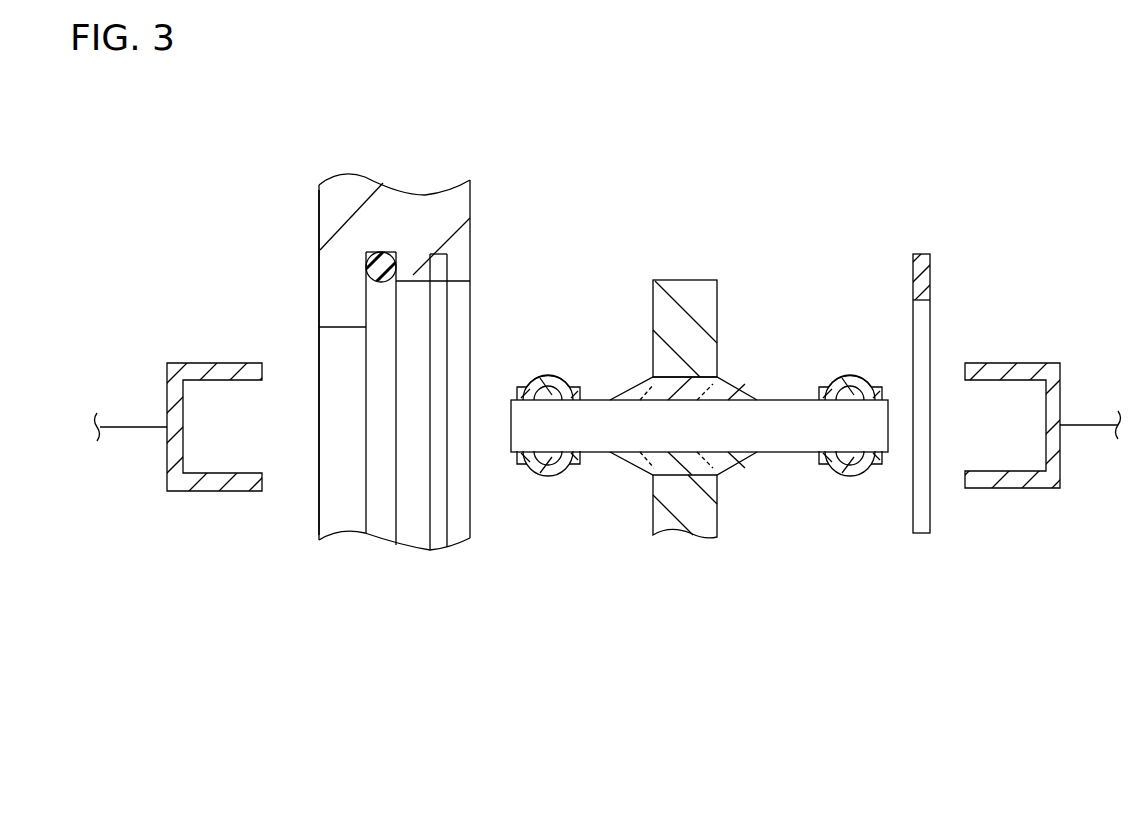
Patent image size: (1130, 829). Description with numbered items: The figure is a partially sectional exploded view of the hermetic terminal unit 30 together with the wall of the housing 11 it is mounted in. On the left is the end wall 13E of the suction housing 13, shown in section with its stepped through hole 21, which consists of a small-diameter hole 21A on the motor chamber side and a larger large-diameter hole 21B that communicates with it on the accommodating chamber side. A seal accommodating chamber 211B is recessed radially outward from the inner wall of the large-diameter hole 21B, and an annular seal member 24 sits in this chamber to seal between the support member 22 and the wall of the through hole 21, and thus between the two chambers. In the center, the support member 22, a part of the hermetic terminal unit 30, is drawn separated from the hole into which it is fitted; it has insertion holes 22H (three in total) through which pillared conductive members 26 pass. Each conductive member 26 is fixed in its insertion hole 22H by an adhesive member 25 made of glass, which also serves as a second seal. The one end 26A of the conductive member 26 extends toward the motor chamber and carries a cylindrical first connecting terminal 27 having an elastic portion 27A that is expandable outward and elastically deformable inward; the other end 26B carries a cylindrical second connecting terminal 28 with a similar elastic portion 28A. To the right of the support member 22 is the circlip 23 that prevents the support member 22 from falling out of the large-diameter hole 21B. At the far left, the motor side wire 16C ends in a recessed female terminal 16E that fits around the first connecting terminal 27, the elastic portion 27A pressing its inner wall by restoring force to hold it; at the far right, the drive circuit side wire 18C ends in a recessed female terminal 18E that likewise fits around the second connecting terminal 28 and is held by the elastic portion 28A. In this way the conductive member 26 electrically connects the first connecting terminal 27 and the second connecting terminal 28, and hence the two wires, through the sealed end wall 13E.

The housing 11 is at (563, 221).
The suction housing 13 is at (448, 362).
The end wall 13E is at (319, 210).
The motor side wire 16C is at (122, 425).
The female terminal 16E is at (180, 363).
The drive circuit side wire 18C is at (1092, 422).
The female terminal 18E is at (1033, 362).
The through hole 21 is at (405, 323).
The small-diameter hole 21A is at (346, 337).
The large-diameter hole 21B is at (422, 290).
The seal accommodating chamber 211B is at (390, 262).
The support member 22 is at (700, 528).
The insertion hole 22H is at (710, 464).
The circlip 23 is at (933, 275).
The seal member 24 is at (386, 283).
The adhesive member 25 is at (643, 455).
The conductive member 26 is at (690, 380).
The one end 26A is at (547, 440).
The other end 26B is at (850, 447).
The first connecting terminal 27 is at (513, 462).
The elastic portion 27A is at (552, 377).
The second connecting terminal 28 is at (885, 458).
The elastic portion 28A is at (853, 382).
The hermetic terminal unit 30 is at (745, 252).